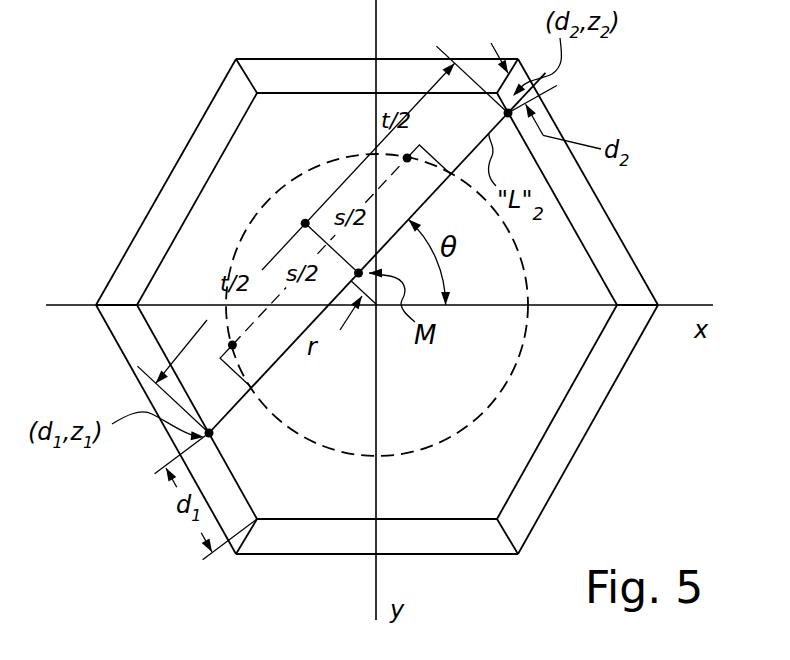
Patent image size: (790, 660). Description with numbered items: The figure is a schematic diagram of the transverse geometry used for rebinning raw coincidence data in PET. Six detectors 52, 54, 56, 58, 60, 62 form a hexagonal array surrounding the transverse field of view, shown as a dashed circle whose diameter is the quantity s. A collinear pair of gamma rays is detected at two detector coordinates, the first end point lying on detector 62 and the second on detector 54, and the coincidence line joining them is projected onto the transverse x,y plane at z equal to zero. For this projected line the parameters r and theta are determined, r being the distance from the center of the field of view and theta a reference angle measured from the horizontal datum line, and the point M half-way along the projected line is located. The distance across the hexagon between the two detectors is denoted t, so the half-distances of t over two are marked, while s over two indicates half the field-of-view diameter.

The detector 52 is at (166, 206).
The detector 54 is at (302, 76).
The detector 56 is at (622, 258).
The detector 58 is at (568, 472).
The detector 60 is at (446, 545).
The detector 62 is at (112, 325).